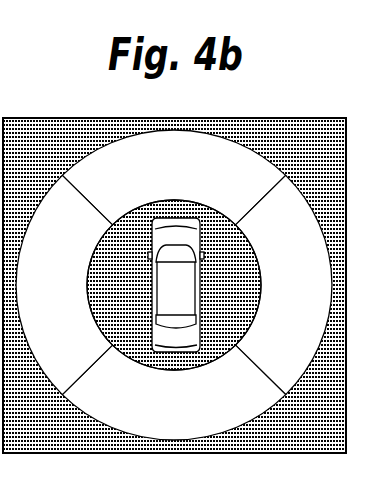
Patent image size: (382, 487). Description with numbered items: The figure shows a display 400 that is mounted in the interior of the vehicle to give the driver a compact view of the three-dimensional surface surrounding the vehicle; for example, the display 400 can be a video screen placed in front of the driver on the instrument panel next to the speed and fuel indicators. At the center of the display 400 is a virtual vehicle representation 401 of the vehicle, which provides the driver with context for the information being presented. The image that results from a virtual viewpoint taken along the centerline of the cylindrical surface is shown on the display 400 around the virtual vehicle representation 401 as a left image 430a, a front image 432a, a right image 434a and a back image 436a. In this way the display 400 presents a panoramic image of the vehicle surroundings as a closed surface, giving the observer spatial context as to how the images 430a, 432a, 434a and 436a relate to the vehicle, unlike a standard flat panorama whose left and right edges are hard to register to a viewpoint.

The display 400 is at (174, 285).
The virtual vehicle representation 401 is at (176, 285).
The left image 430a is at (64, 284).
The front image 432a is at (173, 177).
The right image 434a is at (284, 284).
The back image 436a is at (173, 393).